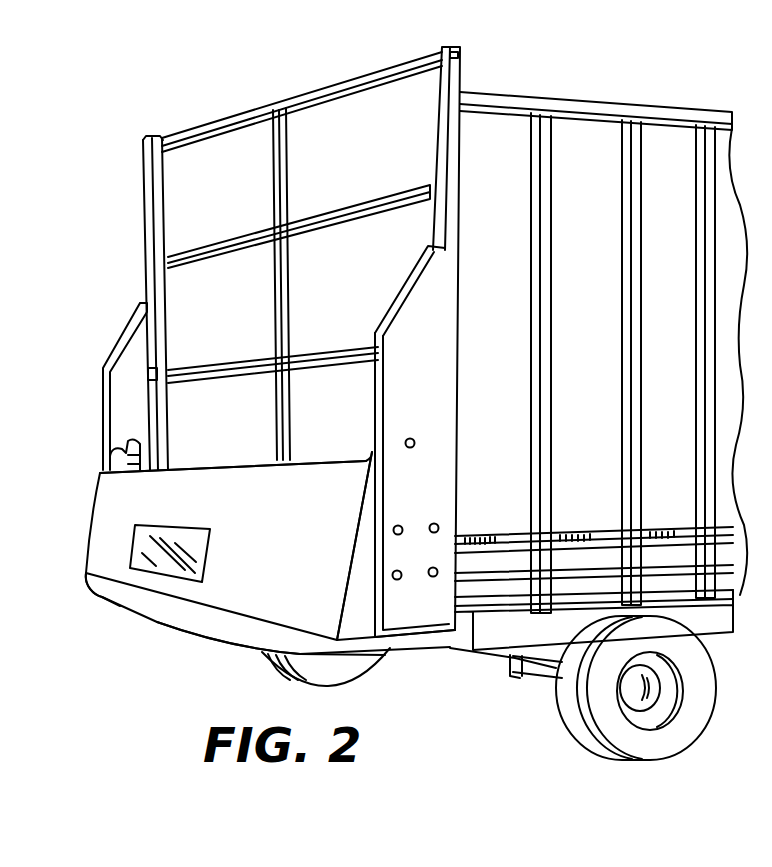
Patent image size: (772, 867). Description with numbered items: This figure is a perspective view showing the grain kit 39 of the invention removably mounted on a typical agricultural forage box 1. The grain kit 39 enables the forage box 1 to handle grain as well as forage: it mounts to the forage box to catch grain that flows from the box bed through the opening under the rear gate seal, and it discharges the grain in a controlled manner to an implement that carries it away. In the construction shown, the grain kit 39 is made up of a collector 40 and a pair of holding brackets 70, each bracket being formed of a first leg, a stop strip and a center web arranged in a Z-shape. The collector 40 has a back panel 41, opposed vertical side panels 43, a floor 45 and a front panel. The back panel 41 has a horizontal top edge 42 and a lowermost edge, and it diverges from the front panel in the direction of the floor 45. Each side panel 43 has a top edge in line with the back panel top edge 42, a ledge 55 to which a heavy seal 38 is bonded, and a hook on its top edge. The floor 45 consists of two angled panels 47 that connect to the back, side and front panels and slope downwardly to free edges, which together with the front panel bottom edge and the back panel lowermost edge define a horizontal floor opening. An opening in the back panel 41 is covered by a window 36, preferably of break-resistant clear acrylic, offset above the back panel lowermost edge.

The forage box 1 is at (536, 96).
The window 36 is at (135, 538).
The heavy seal 38 is at (393, 628).
The grain kit 39 is at (333, 467).
The collector 40 is at (158, 622).
The back panel 41 is at (272, 514).
The horizontal top edge 42 is at (190, 472).
The vertical side panel 43 is at (352, 603).
The floor 45 is at (103, 595).
The angled panel 47 is at (249, 654).
The ledge 55 is at (431, 642).
The holding bracket 70 is at (148, 347).